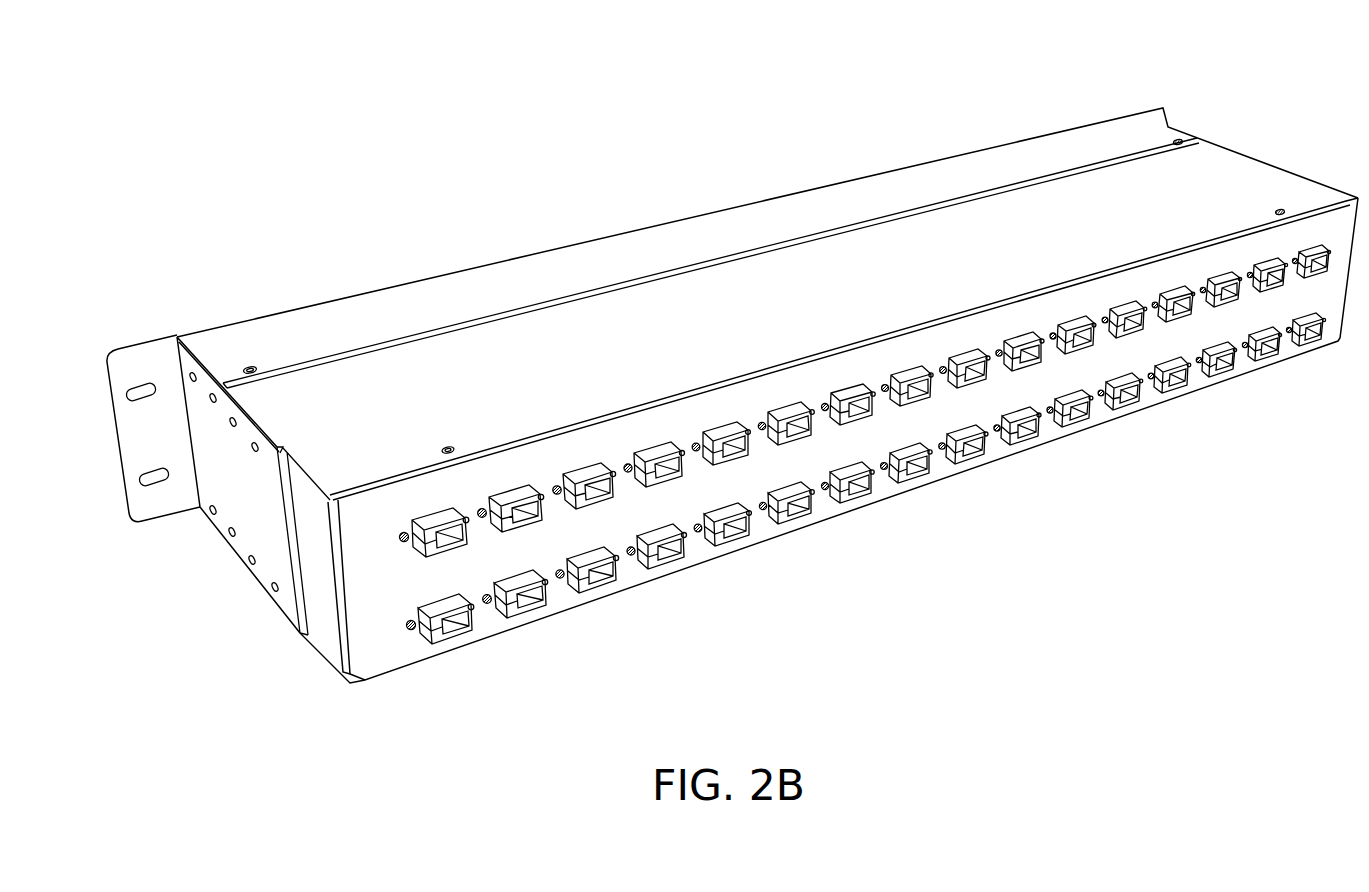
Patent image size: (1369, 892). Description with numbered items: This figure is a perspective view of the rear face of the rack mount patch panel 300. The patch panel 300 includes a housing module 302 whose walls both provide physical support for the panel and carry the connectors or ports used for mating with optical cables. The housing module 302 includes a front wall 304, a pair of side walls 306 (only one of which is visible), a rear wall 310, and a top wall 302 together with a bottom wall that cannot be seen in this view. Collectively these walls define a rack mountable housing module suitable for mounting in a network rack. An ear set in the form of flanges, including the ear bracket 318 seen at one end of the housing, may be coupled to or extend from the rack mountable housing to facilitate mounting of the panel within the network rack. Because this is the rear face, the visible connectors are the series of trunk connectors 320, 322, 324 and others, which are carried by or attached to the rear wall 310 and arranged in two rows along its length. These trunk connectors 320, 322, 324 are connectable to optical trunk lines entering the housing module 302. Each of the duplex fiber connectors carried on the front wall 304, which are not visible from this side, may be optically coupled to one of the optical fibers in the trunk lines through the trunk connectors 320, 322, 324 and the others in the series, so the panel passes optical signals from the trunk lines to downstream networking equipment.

The patch panel 300 is at (273, 244).
The housing module 302 is at (1205, 170).
The front wall 304 is at (493, 283).
The side wall 306 is at (257, 542).
The rear wall 310 is at (372, 660).
The ear bracket 318 is at (126, 476).
The trunk connector 320 is at (452, 658).
The trunk connector 322 is at (527, 632).
The trunk connector 324 is at (607, 605).